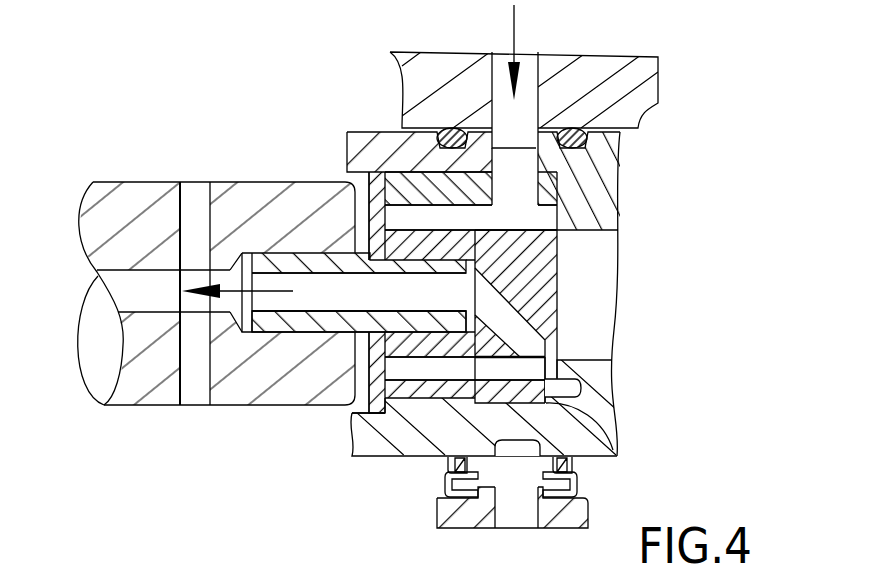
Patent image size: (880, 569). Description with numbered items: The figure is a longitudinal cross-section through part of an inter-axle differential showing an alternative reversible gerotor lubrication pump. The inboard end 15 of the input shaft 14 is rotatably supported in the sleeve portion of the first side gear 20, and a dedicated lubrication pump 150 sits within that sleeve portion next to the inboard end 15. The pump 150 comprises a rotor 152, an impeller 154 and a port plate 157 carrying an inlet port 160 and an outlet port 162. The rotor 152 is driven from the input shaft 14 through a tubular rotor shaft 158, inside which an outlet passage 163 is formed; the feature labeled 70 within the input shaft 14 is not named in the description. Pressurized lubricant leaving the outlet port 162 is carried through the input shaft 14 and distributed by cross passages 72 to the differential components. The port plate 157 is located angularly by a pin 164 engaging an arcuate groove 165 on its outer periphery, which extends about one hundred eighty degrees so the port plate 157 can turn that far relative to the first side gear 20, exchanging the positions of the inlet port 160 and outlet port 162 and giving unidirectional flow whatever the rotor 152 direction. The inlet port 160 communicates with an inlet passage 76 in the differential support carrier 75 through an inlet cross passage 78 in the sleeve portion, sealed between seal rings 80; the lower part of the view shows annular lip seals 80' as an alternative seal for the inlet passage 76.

The input shaft 14 is at (97, 218).
The inboard end 15 is at (322, 193).
The first side gear 20 is at (605, 220).
The bore 70 is at (117, 285).
The cross passages 72 is at (195, 190).
The differential support carrier 75 is at (623, 67).
The inlet passage 76 is at (528, 57).
The inlet cross passage 78 is at (525, 160).
The seal rings 80 is at (522, 81).
The annular lip seals 80' is at (542, 478).
The lubrication pump 150 is at (410, 400).
The rotor 152 is at (433, 254).
The impeller 154 is at (440, 177).
The port plate 157 is at (545, 267).
The rotor shaft 158 is at (312, 320).
The inlet port 160 is at (538, 217).
The outlet port 162 is at (550, 373).
The outlet passage 163 is at (312, 280).
The pin 164 is at (570, 392).
The arcuate groove 165 is at (620, 440).